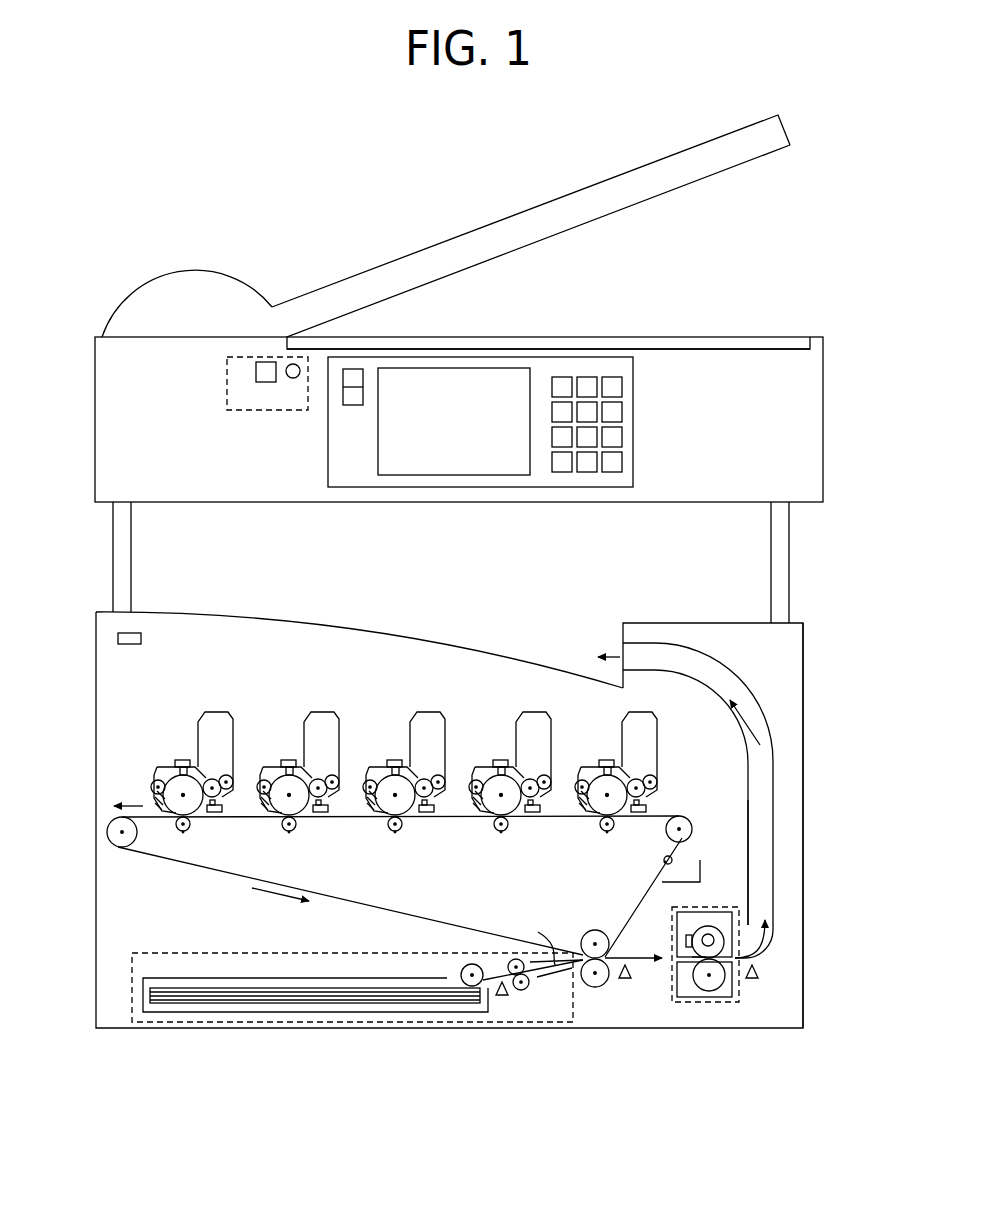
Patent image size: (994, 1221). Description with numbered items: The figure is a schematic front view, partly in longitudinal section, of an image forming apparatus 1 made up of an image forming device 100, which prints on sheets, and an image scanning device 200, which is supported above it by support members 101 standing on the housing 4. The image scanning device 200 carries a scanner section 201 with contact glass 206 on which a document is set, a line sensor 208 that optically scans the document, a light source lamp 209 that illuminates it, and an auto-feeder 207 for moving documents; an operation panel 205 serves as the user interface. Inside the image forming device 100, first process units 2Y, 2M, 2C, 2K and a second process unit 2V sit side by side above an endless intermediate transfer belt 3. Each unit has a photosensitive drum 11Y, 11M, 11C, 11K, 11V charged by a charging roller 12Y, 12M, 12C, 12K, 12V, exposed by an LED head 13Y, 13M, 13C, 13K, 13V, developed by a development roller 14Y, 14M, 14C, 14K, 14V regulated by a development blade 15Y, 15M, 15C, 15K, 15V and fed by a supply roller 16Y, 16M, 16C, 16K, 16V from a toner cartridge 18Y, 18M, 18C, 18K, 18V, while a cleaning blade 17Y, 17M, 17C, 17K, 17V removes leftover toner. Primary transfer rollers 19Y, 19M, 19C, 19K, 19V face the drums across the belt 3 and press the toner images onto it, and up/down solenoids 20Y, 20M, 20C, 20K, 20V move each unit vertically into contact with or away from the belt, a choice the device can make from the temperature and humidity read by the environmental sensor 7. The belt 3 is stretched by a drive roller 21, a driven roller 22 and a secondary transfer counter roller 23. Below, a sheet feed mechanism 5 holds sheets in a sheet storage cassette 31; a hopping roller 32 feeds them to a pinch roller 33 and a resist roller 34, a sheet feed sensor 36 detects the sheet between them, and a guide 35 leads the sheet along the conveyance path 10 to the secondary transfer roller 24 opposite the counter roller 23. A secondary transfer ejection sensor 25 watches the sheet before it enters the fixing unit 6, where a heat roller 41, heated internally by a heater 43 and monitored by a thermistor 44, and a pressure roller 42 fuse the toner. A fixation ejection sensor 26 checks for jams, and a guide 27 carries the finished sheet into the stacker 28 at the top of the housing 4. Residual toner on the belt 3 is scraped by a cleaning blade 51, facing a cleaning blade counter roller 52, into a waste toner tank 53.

The image forming apparatus 1 is at (438, 176).
The image scanning device 200 is at (786, 270).
The auto-feeder 207 is at (198, 270).
The contact glass 206 is at (655, 336).
The scanner section 201 is at (208, 357).
The line sensor 208 is at (266, 383).
The light source lamp 209 is at (293, 379).
The operation panel 205 is at (634, 425).
The support member 101 is at (133, 560).
The image forming device 100 is at (817, 860).
The stacker 28 is at (452, 643).
The housing 4 is at (805, 695).
The environmental sensor 7 is at (115, 638).
The conveyance path 10 is at (708, 678).
The guide 27 is at (775, 767).
The fixation ejection sensor 26 is at (757, 973).
The intermediate transfer belt 3 is at (396, 912).
The drive roller 21 is at (122, 848).
The driven roller 22 is at (680, 816).
The secondary transfer counter roller 23 is at (590, 930).
The secondary transfer roller 24 is at (596, 988).
The secondary transfer ejection sensor 25 is at (628, 981).
The cleaning blade 51 is at (676, 856).
The cleaning blade counter roller 52 is at (664, 863).
The waste toner tank 53 is at (702, 866).
The fixing unit 6 is at (697, 1008).
The heat roller 41 is at (702, 930).
The pressure roller 42 is at (710, 992).
The heater 43 is at (686, 939).
The thermistor 44 is at (692, 949).
The sheet feed mechanism 5 is at (156, 951).
The sheet storage cassette 31 is at (212, 978).
The hopping roller 32 is at (462, 968).
The pinch roller 33 is at (508, 962).
The resist roller 34 is at (530, 983).
The guide 35 is at (540, 960).
The sheet feed sensor 36 is at (505, 992).
The first process unit 2K is at (200, 702).
The first process unit 2C is at (294, 771).
The first process unit 2M is at (401, 778).
The first process unit 2Y is at (506, 778).
The second process unit 2V is at (630, 784).
The photosensitive drum 11K is at (183, 790).
The photosensitive drum 11C is at (289, 766).
The photosensitive drum 11M is at (395, 766).
The photosensitive drum 11Y is at (501, 766).
The photosensitive drum 11V is at (607, 766).
The charging roller 12K is at (158, 780).
The charging roller 12C is at (257, 769).
The charging roller 12M is at (364, 769).
The charging roller 12Y is at (469, 769).
The charging roller 12V is at (577, 770).
The LED head 13K is at (177, 760).
The LED head 13C is at (267, 746).
The LED head 13M is at (373, 746).
The LED head 13Y is at (479, 746).
The LED head 13V is at (585, 746).
The development roller 14K is at (185, 832).
The development roller 14C is at (296, 838).
The development roller 14M is at (403, 838).
The development roller 14Y is at (508, 838).
The development roller 14V is at (613, 838).
The development blade 15K is at (205, 790).
The development blade 15C is at (321, 742).
The development blade 15M is at (427, 742).
The development blade 15Y is at (533, 742).
The development blade 15V is at (639, 741).
The supply roller 16K is at (212, 798).
The supply roller 16C is at (329, 811).
The supply roller 16M is at (436, 811).
The supply roller 16Y is at (541, 811).
The supply roller 16V is at (646, 810).
The cleaning blade 17K is at (165, 814).
The cleaning blade 17C is at (259, 820).
The cleaning blade 17M is at (366, 820).
The cleaning blade 17Y is at (471, 820).
The cleaning blade 17V is at (579, 820).
The toner cartridge 18K is at (202, 722).
The toner cartridge 18C is at (300, 738).
The toner cartridge 18M is at (406, 738).
The toner cartridge 18Y is at (512, 738).
The toner cartridge 18V is at (617, 738).
The primary transfer roller 19K is at (183, 833).
The primary transfer roller 19C is at (273, 855).
The primary transfer roller 19M is at (378, 862).
The primary transfer roller 19Y is at (484, 862).
The primary transfer roller 19V is at (591, 857).
The up/down solenoid 20K is at (220, 814).
The up/down solenoid 20C is at (329, 833).
The up/down solenoid 20M is at (436, 833).
The up/down solenoid 20Y is at (541, 833).
The up/down solenoid 20V is at (647, 833).